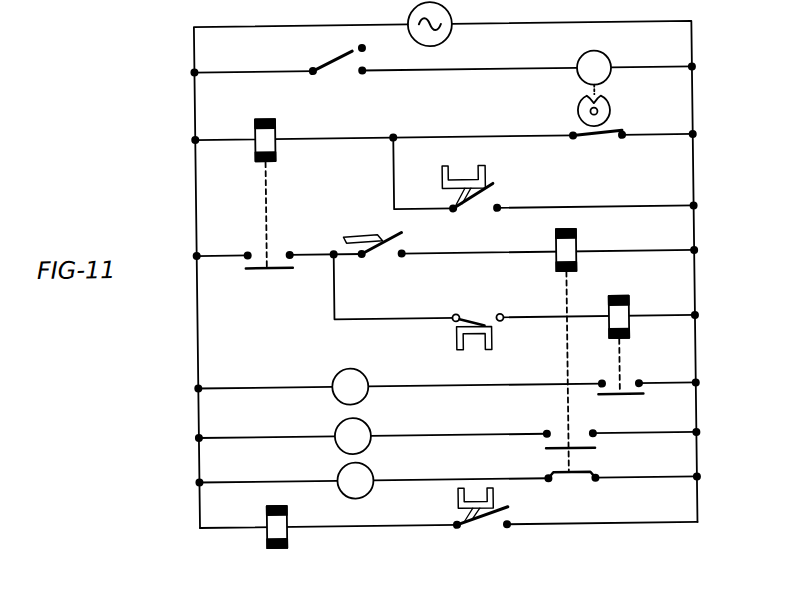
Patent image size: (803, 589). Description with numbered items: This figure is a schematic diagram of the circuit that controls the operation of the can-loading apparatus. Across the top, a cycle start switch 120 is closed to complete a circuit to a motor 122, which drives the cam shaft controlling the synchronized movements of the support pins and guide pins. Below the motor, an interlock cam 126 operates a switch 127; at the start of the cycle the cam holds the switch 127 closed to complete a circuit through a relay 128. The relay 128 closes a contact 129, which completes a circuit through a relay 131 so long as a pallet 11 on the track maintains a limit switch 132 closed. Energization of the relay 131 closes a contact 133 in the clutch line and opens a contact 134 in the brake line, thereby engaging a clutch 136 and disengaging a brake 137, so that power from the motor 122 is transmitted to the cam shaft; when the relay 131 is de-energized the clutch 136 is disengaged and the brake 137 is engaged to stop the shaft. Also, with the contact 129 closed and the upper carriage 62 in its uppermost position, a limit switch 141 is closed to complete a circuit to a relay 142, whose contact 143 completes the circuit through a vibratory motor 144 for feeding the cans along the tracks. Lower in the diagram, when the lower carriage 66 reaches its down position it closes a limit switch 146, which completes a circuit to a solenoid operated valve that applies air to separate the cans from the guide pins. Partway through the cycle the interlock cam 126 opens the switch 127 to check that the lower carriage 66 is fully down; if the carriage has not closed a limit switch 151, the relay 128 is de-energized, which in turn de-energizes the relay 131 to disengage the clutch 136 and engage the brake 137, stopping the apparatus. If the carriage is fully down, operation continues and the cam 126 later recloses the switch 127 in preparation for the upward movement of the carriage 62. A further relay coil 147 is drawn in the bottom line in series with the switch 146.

The pallet 11 is at (360, 233).
The upper carriage 62 is at (456, 341).
The lower carriage 66 is at (443, 180).
The cycle start switch 120 is at (349, 54).
The motor 122 is at (613, 53).
The interlock cam 126 is at (614, 108).
The switch 127 is at (608, 136).
The relay 128 is at (277, 126).
The contact 129 is at (269, 268).
The relay 131 is at (578, 239).
The limit switch 132 is at (391, 249).
The contact 133 is at (594, 450).
The contact 134 is at (583, 477).
The clutch 136 is at (336, 425).
The brake 137 is at (340, 471).
The limit switch 141 is at (468, 313).
The relay 142 is at (630, 299).
The contact 143 is at (635, 377).
The vibratory motor 144 is at (333, 376).
The limit switch 146 is at (506, 509).
The relay coil 147 is at (265, 519).
The limit switch 151 is at (470, 204).